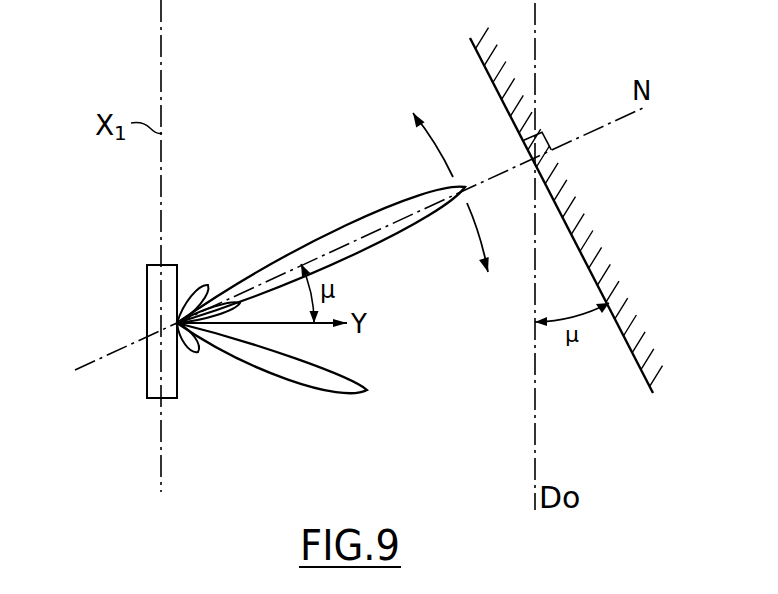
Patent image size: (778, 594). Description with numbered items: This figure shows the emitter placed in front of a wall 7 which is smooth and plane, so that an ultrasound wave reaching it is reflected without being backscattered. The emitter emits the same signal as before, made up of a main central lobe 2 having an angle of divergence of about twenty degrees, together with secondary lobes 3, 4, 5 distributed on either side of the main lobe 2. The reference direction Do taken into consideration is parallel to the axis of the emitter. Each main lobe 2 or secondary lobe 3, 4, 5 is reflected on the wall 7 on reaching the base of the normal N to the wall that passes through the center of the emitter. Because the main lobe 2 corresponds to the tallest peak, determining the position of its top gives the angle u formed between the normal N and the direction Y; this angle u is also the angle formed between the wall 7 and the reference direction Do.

The main central lobe 2 is at (398, 233).
The secondary lobe 3 is at (203, 297).
The secondary lobe 4 is at (350, 378).
The secondary lobe 5 is at (202, 347).
The wall 7 is at (641, 350).